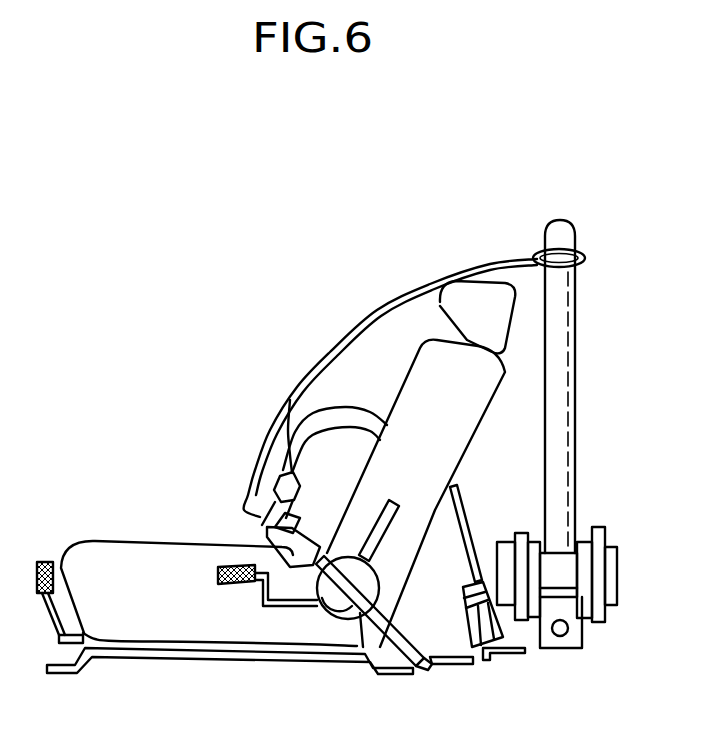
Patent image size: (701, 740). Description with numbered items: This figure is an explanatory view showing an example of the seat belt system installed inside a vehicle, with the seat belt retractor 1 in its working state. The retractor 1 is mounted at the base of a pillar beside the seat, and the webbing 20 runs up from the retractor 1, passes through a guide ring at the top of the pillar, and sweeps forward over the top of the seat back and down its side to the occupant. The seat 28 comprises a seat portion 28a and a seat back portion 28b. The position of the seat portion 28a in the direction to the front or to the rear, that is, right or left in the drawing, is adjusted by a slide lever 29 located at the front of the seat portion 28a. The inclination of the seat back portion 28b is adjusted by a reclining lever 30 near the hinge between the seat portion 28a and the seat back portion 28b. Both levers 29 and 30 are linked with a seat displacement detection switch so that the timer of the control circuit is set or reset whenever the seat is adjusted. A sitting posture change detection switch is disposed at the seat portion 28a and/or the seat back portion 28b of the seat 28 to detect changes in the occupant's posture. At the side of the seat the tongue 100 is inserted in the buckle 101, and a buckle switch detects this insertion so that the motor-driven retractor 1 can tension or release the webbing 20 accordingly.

The seat belt retractor 1 is at (627, 576).
The webbing 20 is at (377, 312).
The seat 28 is at (159, 530).
The seat portion 28a is at (133, 582).
The seat back portion 28b is at (473, 410).
The slide lever 29 is at (46, 562).
The reclining lever 30 is at (237, 583).
The tongue 100 is at (264, 519).
The buckle 101 is at (298, 520).